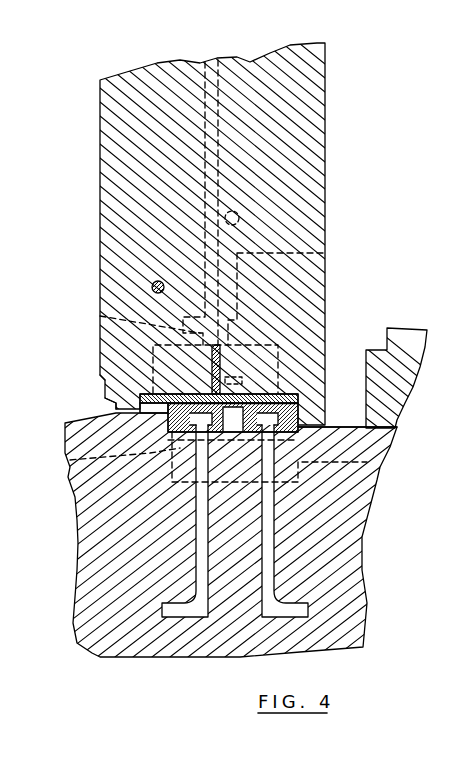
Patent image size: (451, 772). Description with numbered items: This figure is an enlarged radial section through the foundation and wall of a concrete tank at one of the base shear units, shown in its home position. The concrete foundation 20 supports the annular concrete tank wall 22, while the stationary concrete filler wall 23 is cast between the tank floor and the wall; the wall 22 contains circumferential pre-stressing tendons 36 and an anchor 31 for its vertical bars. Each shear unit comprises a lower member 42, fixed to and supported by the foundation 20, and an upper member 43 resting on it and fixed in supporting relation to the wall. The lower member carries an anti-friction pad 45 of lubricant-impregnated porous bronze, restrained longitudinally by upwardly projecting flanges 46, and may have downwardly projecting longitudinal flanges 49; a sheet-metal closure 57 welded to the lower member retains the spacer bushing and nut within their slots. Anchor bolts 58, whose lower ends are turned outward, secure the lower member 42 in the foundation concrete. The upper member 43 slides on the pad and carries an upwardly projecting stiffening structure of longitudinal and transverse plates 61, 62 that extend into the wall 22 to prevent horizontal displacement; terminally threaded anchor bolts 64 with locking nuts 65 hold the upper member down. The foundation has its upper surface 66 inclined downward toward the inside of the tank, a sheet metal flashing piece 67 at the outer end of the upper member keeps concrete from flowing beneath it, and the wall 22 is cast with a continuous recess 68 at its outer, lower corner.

The concrete foundation 20 is at (366, 620).
The annular concrete tank wall 22 is at (326, 192).
The stationary concrete filler wall 23 is at (417, 368).
The anchor 31 is at (100, 316).
The circumferential pre-stressing tendon 36 is at (152, 288).
The lower member 42 is at (298, 409).
The upper member 43 is at (272, 393).
The anti-friction pad 45 is at (297, 395).
The upwardly projecting flange 46 is at (116, 413).
The downwardly projecting longitudinal flange 49 is at (367, 462).
The sheet-metal closure 57 is at (70, 460).
The anchor bolt 58 is at (282, 610).
The longitudinal plate 61 is at (225, 360).
The transverse plate 62 is at (230, 350).
The anchor bolt 64 is at (325, 258).
The nut 65 is at (248, 386).
The upper surface 66 is at (393, 427).
The sheet metal flashing piece 67 is at (102, 378).
The continuous recess 68 is at (106, 400).